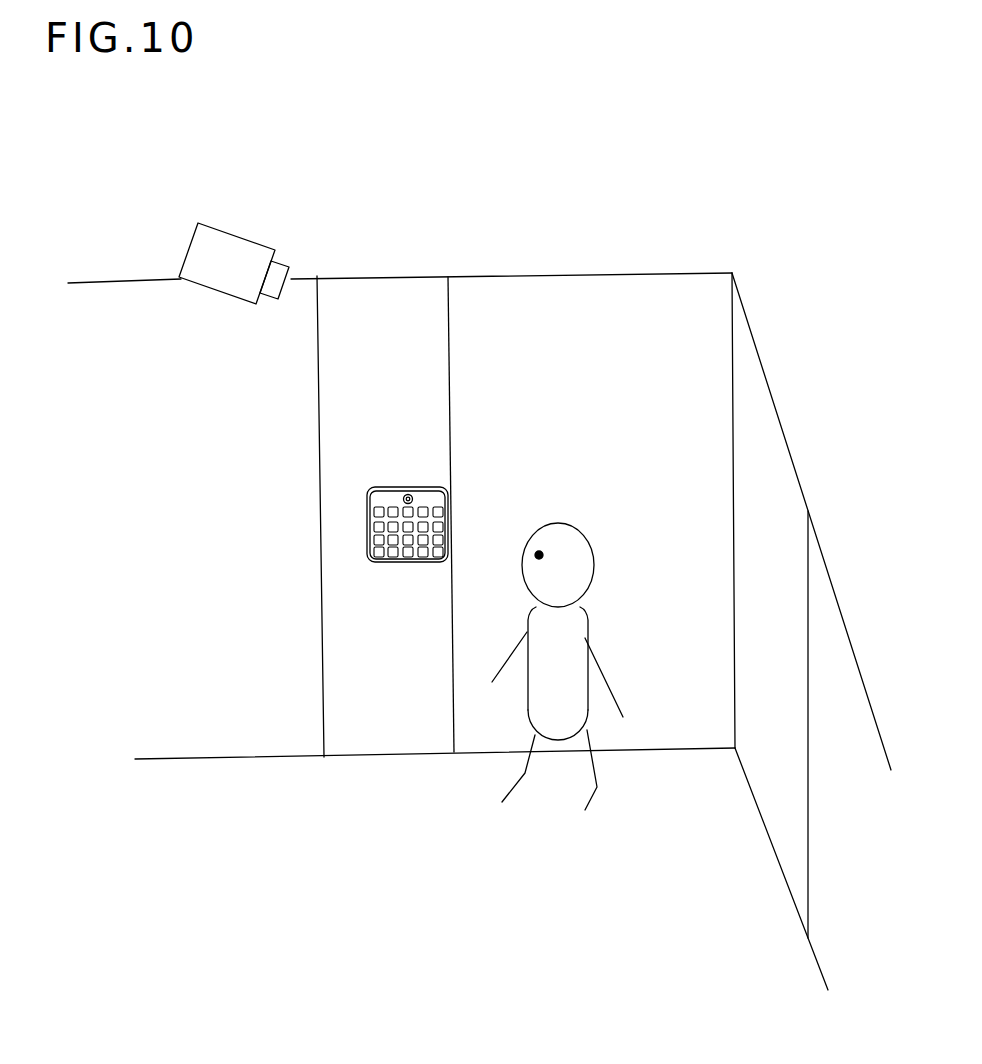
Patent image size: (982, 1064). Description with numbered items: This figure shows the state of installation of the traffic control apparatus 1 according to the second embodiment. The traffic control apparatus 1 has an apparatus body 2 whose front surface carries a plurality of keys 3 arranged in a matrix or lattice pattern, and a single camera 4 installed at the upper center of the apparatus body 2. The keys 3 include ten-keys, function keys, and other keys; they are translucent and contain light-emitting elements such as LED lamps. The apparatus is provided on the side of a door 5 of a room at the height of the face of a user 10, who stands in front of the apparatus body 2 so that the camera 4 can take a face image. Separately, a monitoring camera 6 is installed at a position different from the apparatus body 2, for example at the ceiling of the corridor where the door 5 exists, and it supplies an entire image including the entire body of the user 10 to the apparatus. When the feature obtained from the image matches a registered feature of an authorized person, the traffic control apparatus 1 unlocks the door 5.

The traffic control apparatus 1 is at (374, 477).
The apparatus body 2 is at (441, 498).
The keys 3 is at (377, 540).
The camera 4 is at (403, 498).
The door 5 is at (625, 292).
The monitoring camera 6 is at (279, 259).
The user 10 is at (541, 700).